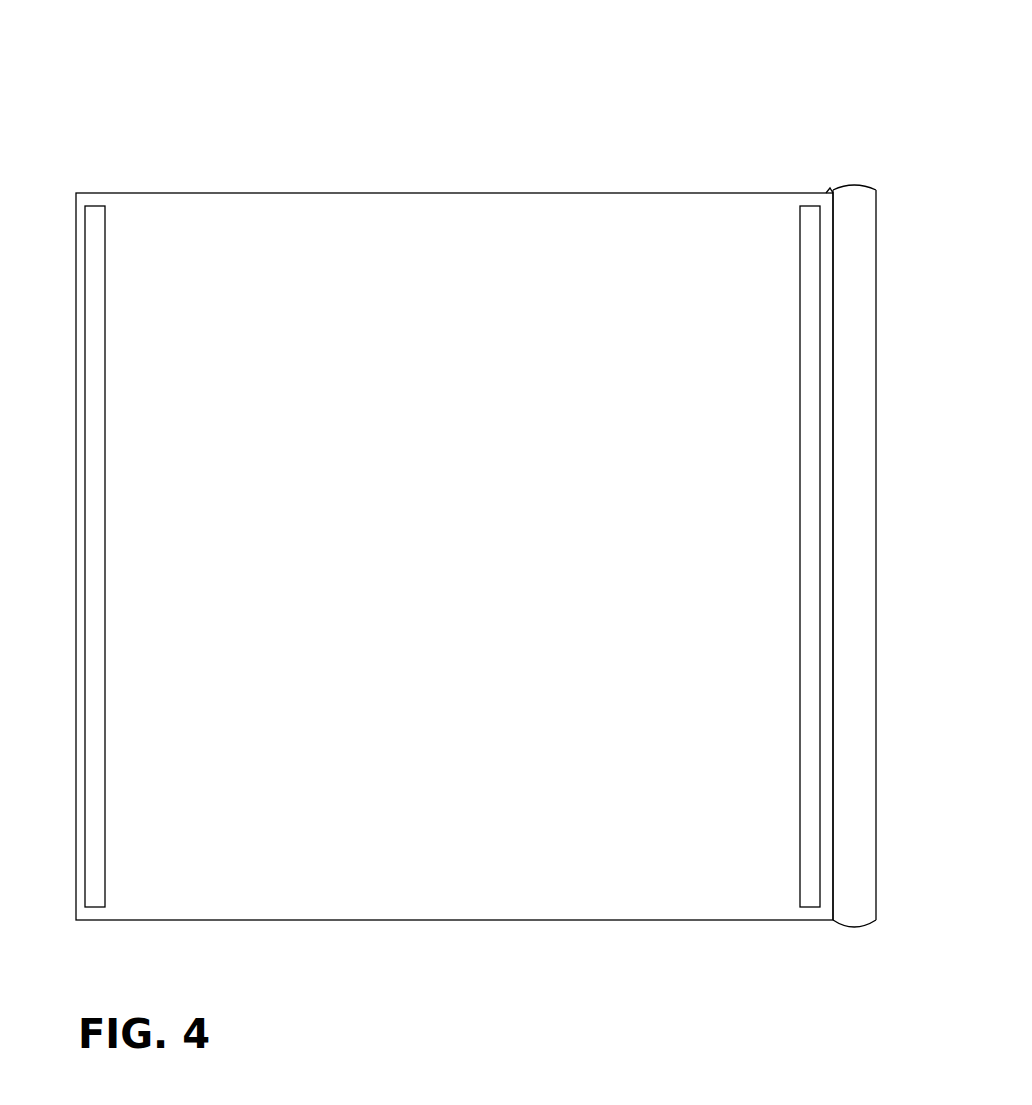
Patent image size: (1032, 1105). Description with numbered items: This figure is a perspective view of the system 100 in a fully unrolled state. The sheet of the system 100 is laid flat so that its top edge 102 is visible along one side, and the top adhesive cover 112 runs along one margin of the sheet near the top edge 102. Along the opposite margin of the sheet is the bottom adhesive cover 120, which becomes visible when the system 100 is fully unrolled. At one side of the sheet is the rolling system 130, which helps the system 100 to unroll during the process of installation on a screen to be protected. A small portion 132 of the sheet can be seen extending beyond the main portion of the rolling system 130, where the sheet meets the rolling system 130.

The system 100 is at (228, 118).
The top edge 102 is at (75, 348).
The top adhesive cover 112 is at (103, 234).
The bottom adhesive cover 120 is at (807, 278).
The rolling system 130 is at (876, 339).
The small portion 132 is at (824, 188).